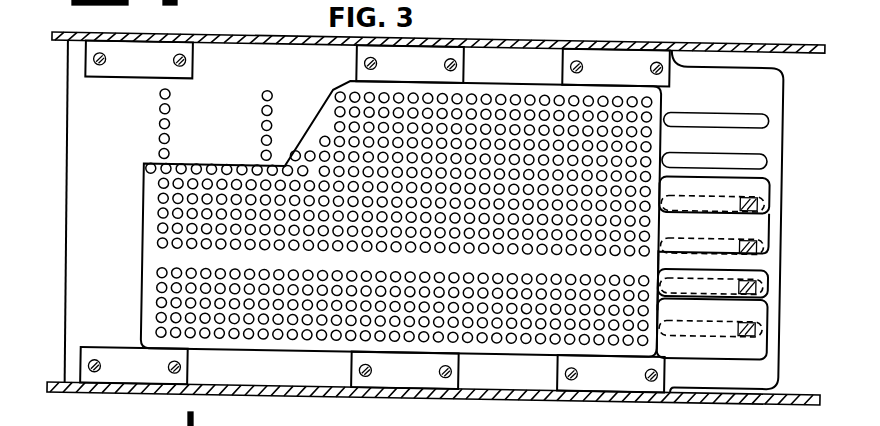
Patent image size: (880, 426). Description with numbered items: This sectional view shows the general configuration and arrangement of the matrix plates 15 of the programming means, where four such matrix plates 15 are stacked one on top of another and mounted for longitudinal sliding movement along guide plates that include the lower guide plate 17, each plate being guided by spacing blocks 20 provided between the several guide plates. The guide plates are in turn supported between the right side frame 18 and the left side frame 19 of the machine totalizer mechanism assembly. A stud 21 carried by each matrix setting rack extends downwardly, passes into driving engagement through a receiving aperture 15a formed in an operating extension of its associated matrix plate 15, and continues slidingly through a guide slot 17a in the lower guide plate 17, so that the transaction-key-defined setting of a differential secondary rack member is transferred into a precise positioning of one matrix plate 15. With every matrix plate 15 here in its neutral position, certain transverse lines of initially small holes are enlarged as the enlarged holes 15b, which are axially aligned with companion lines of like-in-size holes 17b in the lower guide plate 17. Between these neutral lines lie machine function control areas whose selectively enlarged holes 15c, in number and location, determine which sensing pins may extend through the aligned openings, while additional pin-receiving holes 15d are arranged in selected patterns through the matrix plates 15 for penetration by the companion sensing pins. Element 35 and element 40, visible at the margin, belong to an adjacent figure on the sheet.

The matrix plate 15 is at (482, 90).
The receiving aperture 15a is at (758, 258).
The enlarged holes 15b is at (163, 336).
The enlarged holes 15c is at (223, 198).
The additional pin-receiving holes 15d is at (400, 170).
The lower guide plate 17 is at (718, 87).
The guide slot 17a is at (758, 155).
The holes 17b is at (266, 95).
The right side frame 18 is at (503, 398).
The left side frame 19 is at (557, 44).
The spacing blocks 20 is at (413, 55).
The stud 21 is at (755, 250).
The element of adjacent figure 35 is at (239, 0).
The element of adjacent figure 40 is at (211, 419).